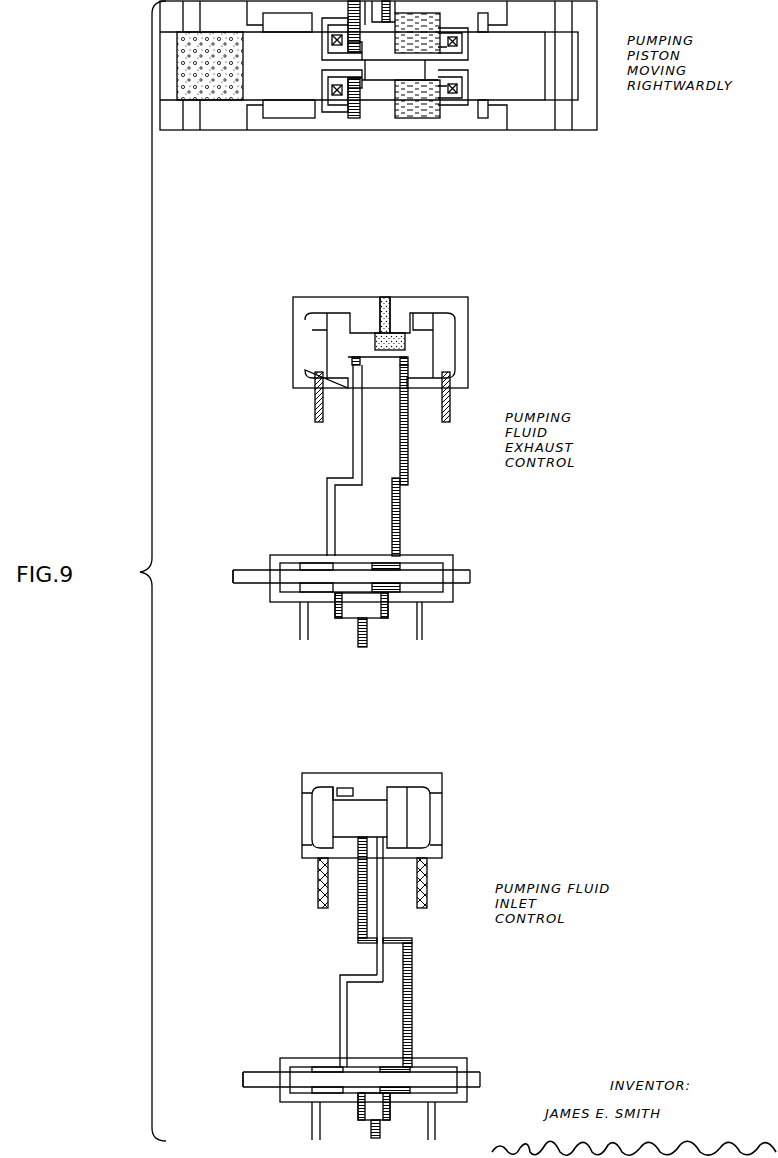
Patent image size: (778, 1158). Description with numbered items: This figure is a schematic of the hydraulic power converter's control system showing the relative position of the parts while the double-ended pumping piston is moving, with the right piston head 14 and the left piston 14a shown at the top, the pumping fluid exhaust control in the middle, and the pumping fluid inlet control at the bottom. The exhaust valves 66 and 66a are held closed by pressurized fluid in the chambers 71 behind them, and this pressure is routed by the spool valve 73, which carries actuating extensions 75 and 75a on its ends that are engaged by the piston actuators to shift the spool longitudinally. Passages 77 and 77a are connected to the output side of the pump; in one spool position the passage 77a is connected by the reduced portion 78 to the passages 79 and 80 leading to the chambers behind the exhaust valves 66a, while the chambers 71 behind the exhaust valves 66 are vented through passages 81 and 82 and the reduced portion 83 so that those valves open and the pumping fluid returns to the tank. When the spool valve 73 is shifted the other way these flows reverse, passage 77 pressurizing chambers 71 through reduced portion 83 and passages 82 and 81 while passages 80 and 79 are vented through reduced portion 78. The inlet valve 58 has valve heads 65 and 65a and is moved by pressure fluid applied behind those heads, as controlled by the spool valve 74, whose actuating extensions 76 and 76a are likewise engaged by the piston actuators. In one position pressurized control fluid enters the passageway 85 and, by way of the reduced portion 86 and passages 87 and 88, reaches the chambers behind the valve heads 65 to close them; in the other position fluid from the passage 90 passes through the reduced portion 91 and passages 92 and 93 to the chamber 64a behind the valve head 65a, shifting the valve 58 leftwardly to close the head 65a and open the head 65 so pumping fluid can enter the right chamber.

The piston head 14 is at (515, 85).
The left piston 14a is at (292, 78).
The valve 58 is at (375, 826).
The chamber 64a is at (347, 790).
The valve head 65 is at (410, 813).
The valve head 65a is at (322, 822).
The exhaust valve 66 is at (447, 343).
The exhaust valve 66a is at (330, 341).
The chamber 71 is at (424, 322).
The spool valve 73 is at (360, 587).
The spool valve 74 is at (372, 1093).
The actuating extension 75 is at (458, 573).
The actuating extension 75a is at (246, 580).
The actuating extension 76 is at (474, 1074).
The actuating extension 76a is at (254, 1090).
The passage 77 is at (376, 622).
The passage 77a is at (355, 622).
The reduced portion 78 is at (326, 582).
The passage 79 is at (355, 465).
The passage 80 is at (352, 372).
The passage 81 is at (408, 372).
The passage 82 is at (410, 463).
The reduced portion 83 is at (396, 582).
The passageway 85 is at (362, 1121).
The reduced portion 86 is at (337, 1092).
The passage 87 is at (361, 982).
The passage 88 is at (383, 918).
The passage 90 is at (389, 1121).
The reduced portion 91 is at (399, 1090).
The passage 92 is at (411, 989).
The passage 93 is at (358, 916).